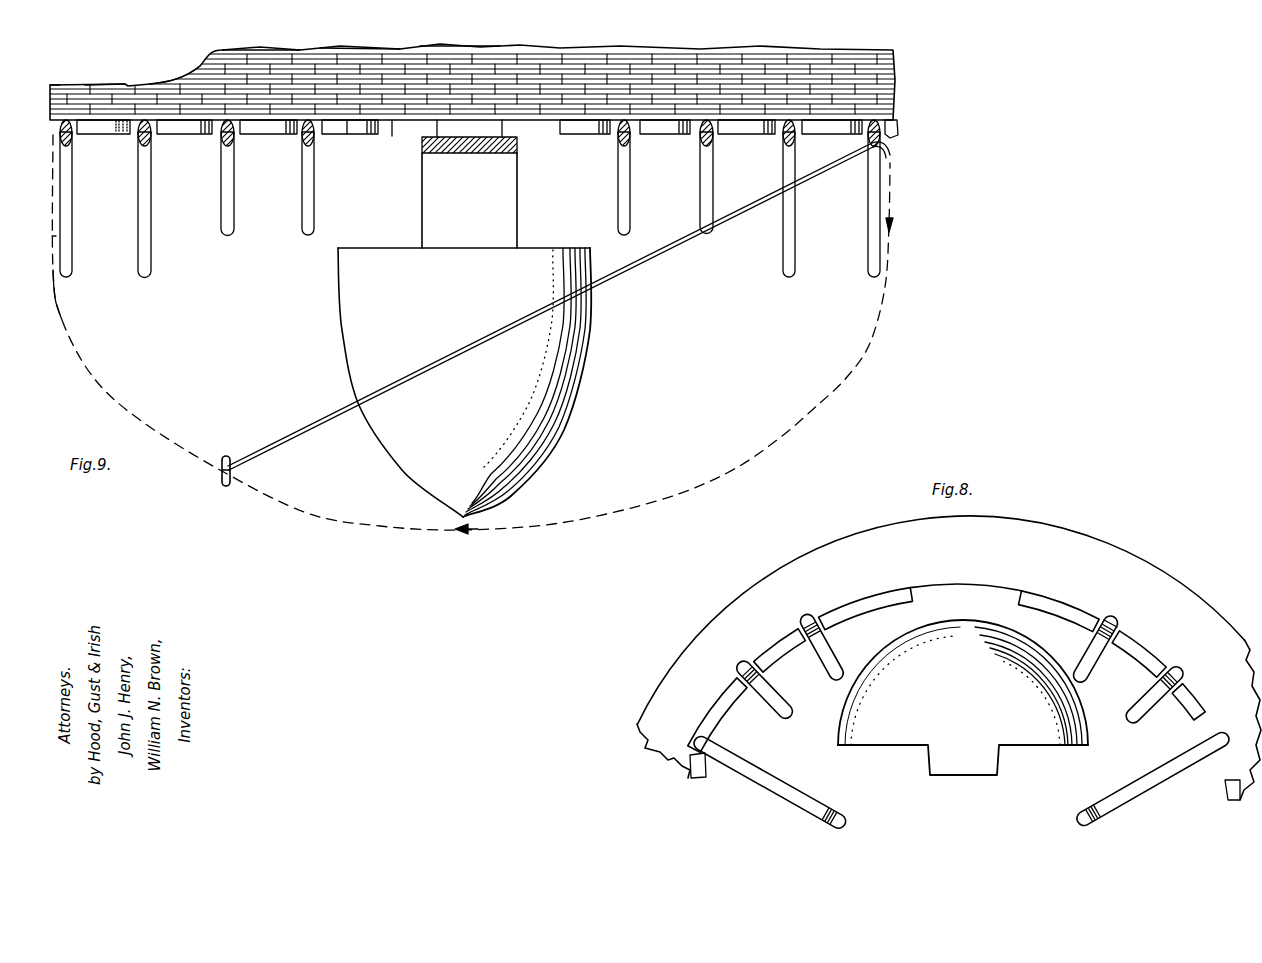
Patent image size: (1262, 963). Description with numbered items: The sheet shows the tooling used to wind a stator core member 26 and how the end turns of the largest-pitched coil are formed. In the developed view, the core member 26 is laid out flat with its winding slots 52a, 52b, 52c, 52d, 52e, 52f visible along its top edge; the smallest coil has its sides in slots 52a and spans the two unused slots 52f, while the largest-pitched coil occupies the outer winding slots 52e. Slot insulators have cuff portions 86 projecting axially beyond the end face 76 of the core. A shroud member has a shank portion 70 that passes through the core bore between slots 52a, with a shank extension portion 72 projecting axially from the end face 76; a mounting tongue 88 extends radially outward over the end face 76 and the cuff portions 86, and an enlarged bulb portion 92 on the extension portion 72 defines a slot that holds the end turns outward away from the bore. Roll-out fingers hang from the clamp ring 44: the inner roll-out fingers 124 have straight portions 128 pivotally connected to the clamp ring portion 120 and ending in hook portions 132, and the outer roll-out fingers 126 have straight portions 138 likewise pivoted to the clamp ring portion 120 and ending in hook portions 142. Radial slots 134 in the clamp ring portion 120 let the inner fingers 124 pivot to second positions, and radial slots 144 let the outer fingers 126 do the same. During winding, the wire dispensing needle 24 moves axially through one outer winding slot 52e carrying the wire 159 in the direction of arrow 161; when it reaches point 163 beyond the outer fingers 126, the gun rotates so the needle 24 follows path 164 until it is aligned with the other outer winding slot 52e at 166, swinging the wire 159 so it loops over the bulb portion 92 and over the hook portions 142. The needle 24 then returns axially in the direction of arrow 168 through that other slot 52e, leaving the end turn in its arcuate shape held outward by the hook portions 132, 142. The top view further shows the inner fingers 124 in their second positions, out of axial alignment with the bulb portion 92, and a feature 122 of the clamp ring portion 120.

In FIG. 9, the stator core member 26 is at (548, 70).
In FIG. 9, the winding slots 52a is at (350, 46).
In FIG. 9, the winding slots 52b is at (260, 47).
In FIG. 9, the winding slots 52c is at (172, 72).
In FIG. 9, the winding slots 52d is at (102, 84).
In FIG. 9, the outer winding slots 52e is at (55, 84).
In FIG. 9, the unused slots 52f is at (440, 44).
In FIG. 9, the straight portions 138 is at (78, 138).
In FIG. 8, the straight portions 138 is at (728, 760).
In FIG. 9, the hook portions 142 is at (136, 197).
In FIG. 8, the hook portions 142 is at (845, 826).
In FIG. 9, the arrow 168 is at (54, 238).
In FIG. 9, the outer roll-out fingers 126 is at (78, 258).
In FIG. 8, the outer roll-out fingers 126 is at (800, 788).
In FIG. 9, the alignment position 166 is at (60, 308).
In FIG. 9, the hook portions 132 is at (218, 208).
In FIG. 8, the hook portions 132 is at (824, 672).
In FIG. 9, the inner roll-out fingers 124 is at (235, 212).
In FIG. 8, the inner roll-out fingers 124 is at (803, 620).
In FIG. 9, the straight portions 128 is at (282, 158).
In FIG. 9, the cuff portions 86 is at (347, 136).
In FIG. 9, the end face 76 is at (392, 138).
In FIG. 9, the shank portion 70 is at (488, 125).
In FIG. 9, the mounting tongue 88 is at (478, 146).
In FIG. 9, the shank extension portion 72 is at (508, 204).
In FIG. 8, the shank extension portion 72 is at (963, 777).
In FIG. 9, the bulb portion 92 is at (540, 418).
In FIG. 8, the bulb portion 92 is at (963, 682).
In FIG. 9, the wire 159 is at (632, 283).
In FIG. 9, the wire dispensing needle 24 is at (232, 471).
In FIG. 9, the arrow 161 is at (893, 224).
In FIG. 9, the point 163 is at (818, 402).
In FIG. 9, the path 164 is at (478, 530).
In FIG. 8, the clamp ring 44 is at (1176, 606).
In FIG. 8, the clamp ring portion 120 is at (876, 600).
In FIG. 8, the notch 122 is at (913, 598).
In FIG. 8, the radial slots 134 is at (1104, 625).
In FIG. 8, the radial slots 144 is at (1222, 782).